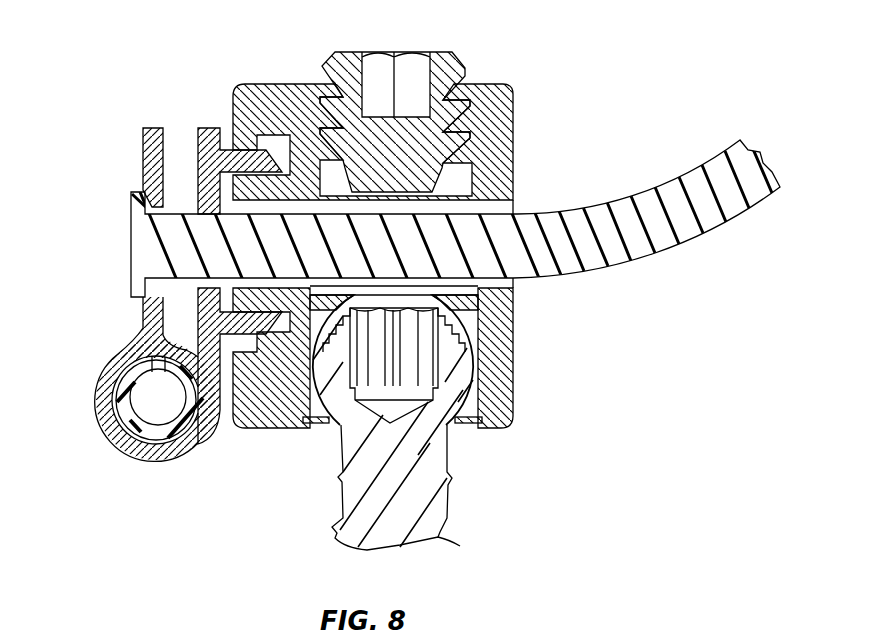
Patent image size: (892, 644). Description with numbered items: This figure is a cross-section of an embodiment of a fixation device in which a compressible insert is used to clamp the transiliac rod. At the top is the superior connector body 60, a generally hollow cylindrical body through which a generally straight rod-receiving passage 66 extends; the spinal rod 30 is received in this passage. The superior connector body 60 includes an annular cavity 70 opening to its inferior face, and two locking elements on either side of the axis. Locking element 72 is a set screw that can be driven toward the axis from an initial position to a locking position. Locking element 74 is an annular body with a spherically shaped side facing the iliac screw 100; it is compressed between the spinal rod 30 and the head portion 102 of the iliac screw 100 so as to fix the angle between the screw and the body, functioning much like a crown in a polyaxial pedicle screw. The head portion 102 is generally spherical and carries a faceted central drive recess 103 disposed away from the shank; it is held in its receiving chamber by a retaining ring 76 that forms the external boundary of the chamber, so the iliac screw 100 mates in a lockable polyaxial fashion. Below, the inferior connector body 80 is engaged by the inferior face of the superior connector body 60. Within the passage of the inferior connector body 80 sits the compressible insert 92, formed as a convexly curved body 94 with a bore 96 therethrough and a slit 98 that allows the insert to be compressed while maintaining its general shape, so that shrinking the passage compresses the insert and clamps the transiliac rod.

The spinal rod 30 is at (580, 258).
The superior connector body 60 is at (394, 278).
The rod-receiving passage 66 is at (490, 205).
The annular cavity 70 is at (277, 148).
The locking element 72 is at (350, 113).
The locking element 74 is at (470, 312).
The retaining ring 76 is at (470, 424).
The inferior connector body 80 is at (168, 114).
The compressible insert 92 is at (142, 432).
The convexly curved body 94 is at (163, 342).
The bore 96 is at (157, 392).
The slit 98 is at (153, 362).
The iliac screw 100 is at (412, 487).
The head portion 102 is at (457, 373).
The faceted central drive recess 103 is at (408, 353).